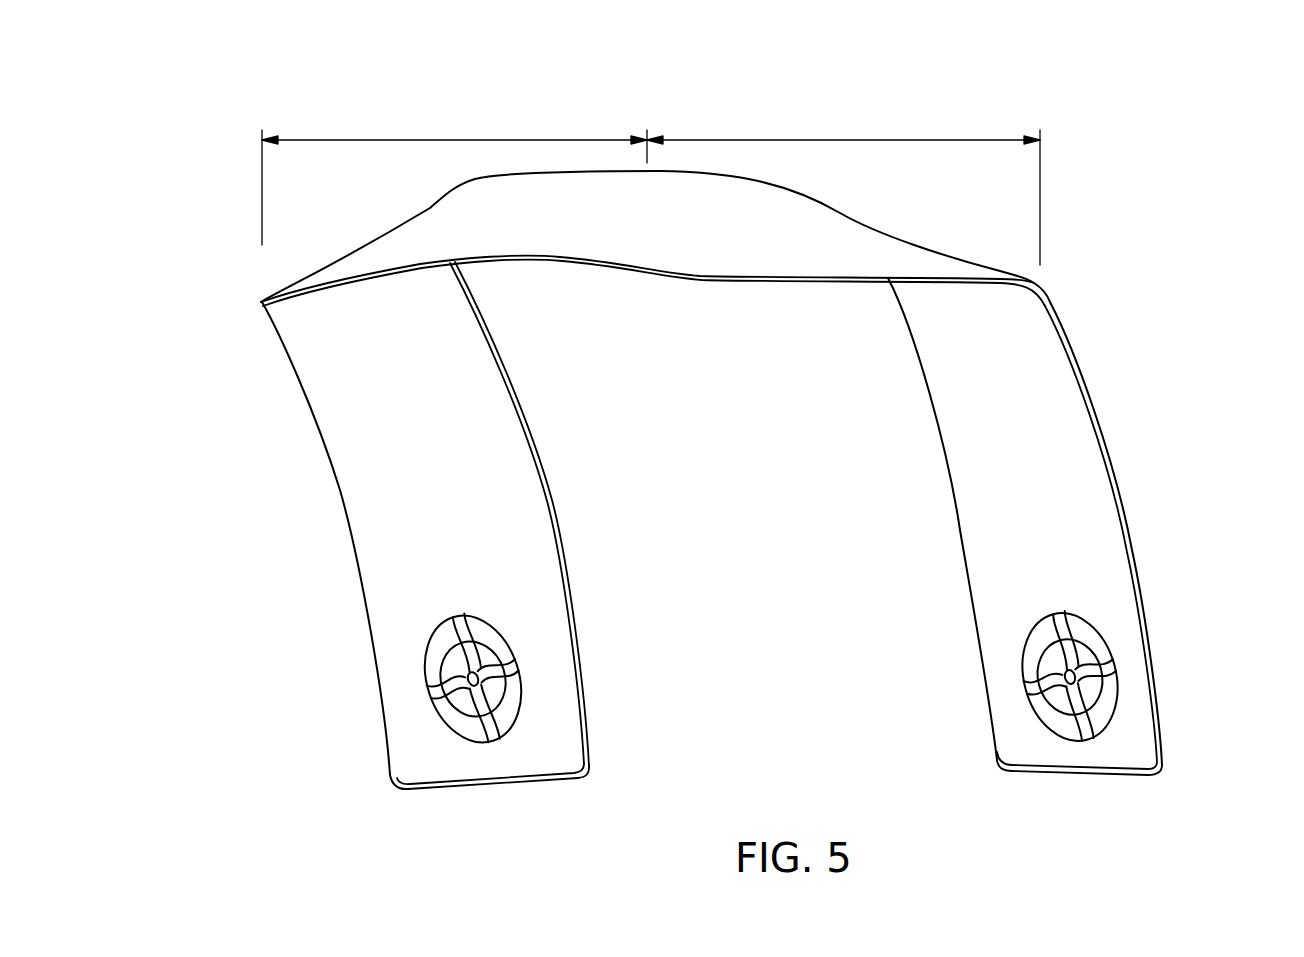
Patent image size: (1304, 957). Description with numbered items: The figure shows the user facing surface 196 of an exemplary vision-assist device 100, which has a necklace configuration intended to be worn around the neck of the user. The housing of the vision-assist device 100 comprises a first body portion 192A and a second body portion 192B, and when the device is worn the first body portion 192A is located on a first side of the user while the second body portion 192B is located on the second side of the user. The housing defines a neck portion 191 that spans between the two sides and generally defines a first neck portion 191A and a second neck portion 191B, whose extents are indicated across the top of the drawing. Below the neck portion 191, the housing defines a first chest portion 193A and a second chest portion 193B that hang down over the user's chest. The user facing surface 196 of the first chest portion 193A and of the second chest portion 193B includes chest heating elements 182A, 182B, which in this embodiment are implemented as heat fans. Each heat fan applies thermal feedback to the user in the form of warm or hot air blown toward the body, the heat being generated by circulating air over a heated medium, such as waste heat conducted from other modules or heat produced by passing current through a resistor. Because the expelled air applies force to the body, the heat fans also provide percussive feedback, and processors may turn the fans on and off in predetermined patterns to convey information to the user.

The vision-assist device 100 is at (1122, 269).
The neck portion 191 is at (604, 160).
The first neck portion 191A is at (801, 134).
The second neck portion 191B is at (464, 136).
The first body portion 192A is at (1077, 526).
The second body portion 192B is at (406, 525).
The first chest portion 193A is at (1085, 428).
The second chest portion 193B is at (312, 385).
The user facing surface 196 is at (1130, 590).
The chest heating element 182A is at (977, 669).
The chest heating element 182B is at (533, 693).